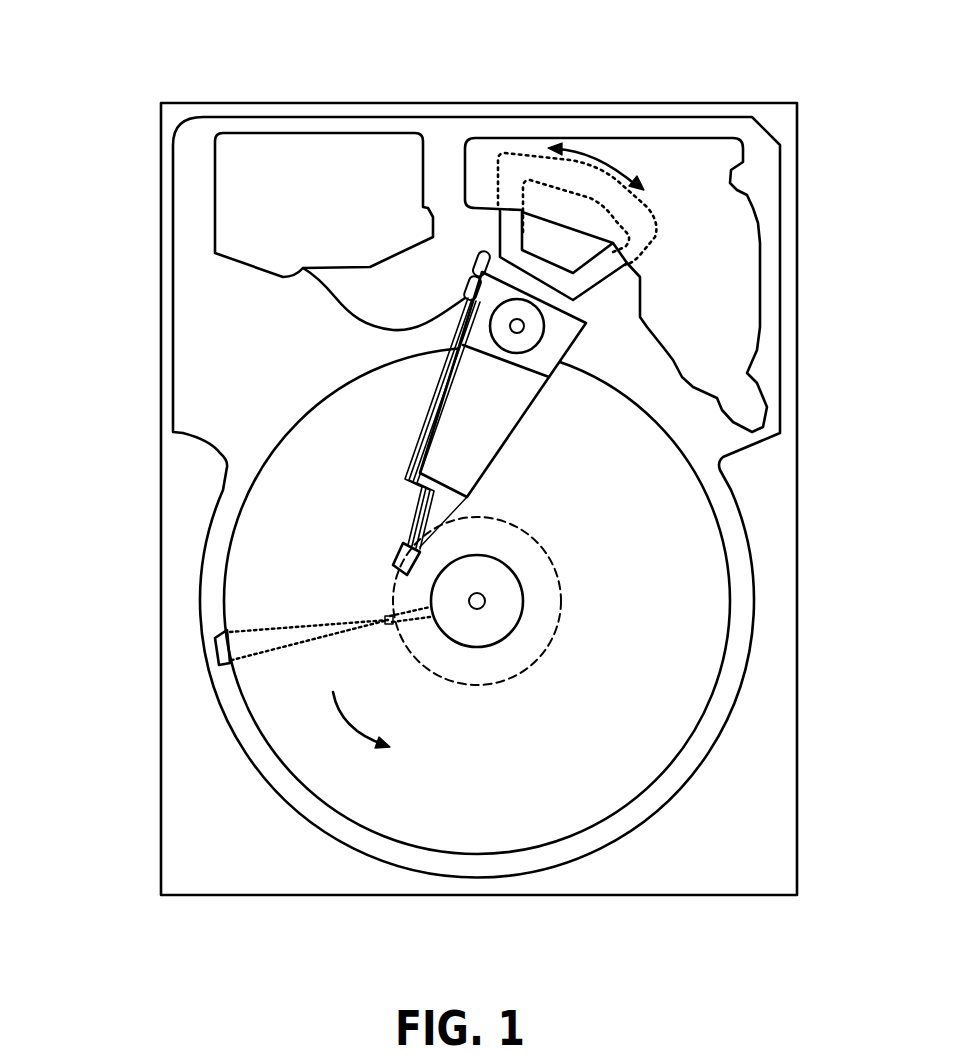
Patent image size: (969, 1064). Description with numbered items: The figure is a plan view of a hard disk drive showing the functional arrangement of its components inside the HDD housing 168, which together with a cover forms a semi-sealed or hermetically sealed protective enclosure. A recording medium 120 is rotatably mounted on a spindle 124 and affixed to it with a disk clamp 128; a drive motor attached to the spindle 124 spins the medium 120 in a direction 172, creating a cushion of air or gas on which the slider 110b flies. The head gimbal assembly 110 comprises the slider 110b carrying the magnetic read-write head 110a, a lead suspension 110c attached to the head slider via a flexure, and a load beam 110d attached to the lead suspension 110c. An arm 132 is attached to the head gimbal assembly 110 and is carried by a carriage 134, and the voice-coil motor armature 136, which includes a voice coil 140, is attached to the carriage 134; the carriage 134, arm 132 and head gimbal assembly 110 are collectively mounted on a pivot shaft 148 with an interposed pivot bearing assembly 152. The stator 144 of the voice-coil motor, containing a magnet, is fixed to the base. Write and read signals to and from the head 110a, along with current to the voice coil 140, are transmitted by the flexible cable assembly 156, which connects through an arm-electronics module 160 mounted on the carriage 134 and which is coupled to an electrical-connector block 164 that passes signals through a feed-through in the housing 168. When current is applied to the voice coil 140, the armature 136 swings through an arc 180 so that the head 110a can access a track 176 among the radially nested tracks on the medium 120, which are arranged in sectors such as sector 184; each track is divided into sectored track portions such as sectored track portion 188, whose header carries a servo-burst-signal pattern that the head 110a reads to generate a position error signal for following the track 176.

The head gimbal assembly 110 is at (252, 436).
The magnetic read-write head 110a is at (387, 575).
The slider 110b is at (408, 543).
The lead suspension 110c is at (413, 508).
The load beam 110d is at (407, 480).
The recording medium 120 is at (655, 555).
The spindle 124 is at (479, 601).
The disk clamp 128 is at (510, 628).
The arm 132 is at (468, 440).
The carriage 134 is at (535, 358).
The armature 136 is at (495, 243).
The voice coil 140 is at (510, 213).
The stator 144 is at (725, 230).
The pivot shaft 148 is at (525, 326).
The pivot bearing assembly 152 is at (530, 342).
The flexible cable assembly 156 is at (337, 300).
The arm-electronics module 160 is at (466, 296).
The electrical-connector block 164 is at (240, 203).
The HDD housing 168 is at (777, 117).
The direction 172 is at (367, 724).
The track 176 is at (553, 566).
The arc 180 is at (598, 160).
The sector 184 is at (213, 648).
The sectored track portion 188 is at (383, 620).